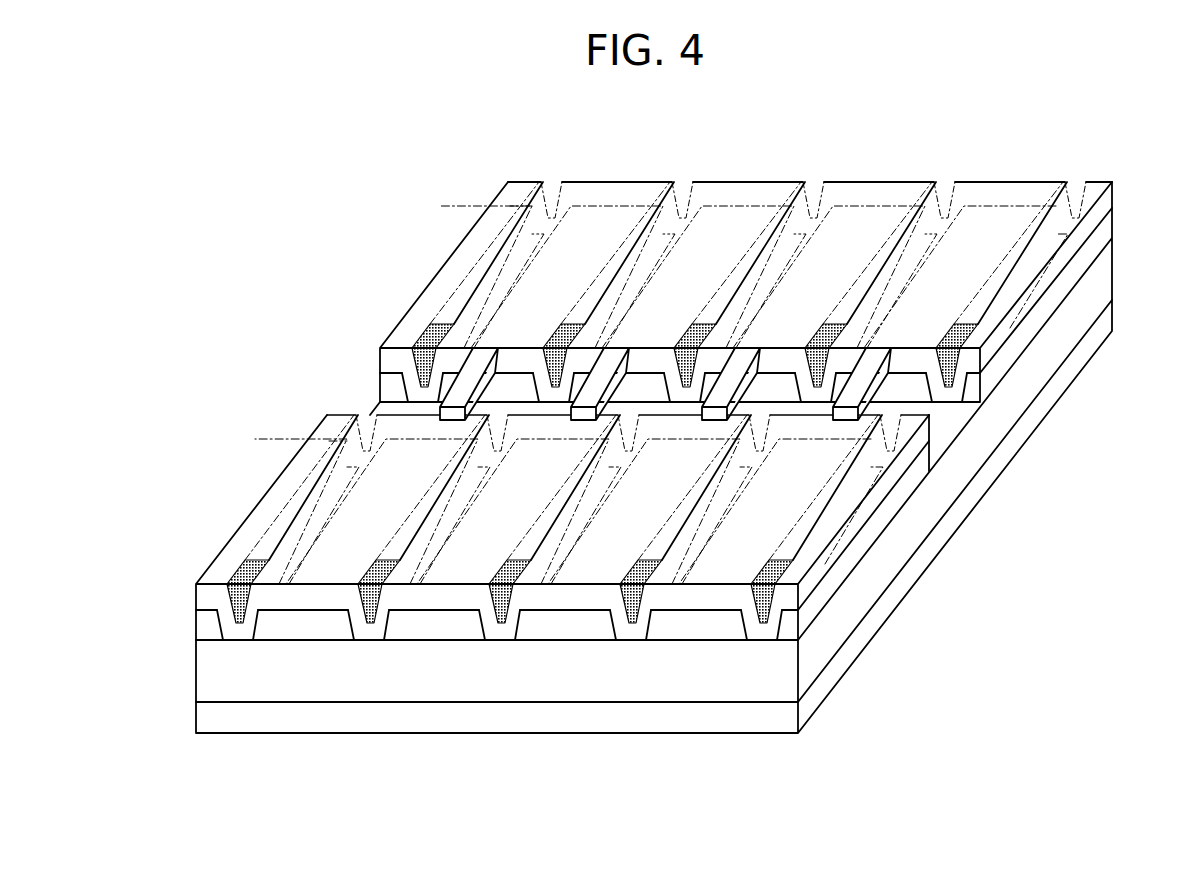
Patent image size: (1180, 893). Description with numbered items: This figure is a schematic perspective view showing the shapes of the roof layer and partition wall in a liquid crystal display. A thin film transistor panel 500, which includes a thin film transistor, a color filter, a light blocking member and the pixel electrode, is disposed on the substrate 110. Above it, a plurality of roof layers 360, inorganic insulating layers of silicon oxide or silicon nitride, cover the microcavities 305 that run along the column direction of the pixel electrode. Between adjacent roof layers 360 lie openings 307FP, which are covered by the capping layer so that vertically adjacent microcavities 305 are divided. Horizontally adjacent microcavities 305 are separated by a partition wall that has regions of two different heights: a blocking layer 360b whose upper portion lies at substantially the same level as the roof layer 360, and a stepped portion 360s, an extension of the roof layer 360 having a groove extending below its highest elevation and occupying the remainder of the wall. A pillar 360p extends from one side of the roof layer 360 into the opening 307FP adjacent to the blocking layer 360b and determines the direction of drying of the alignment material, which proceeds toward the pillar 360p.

The substrate 110 is at (957, 508).
The thin film transistor panel 500 is at (958, 467).
The opening 307FP is at (938, 414).
The roof layer 360 is at (703, 598).
The microcavity 305 is at (507, 392).
The stepped portion 360s is at (598, 287).
The blocking layer 360b is at (560, 318).
The pillar 360p is at (742, 367).